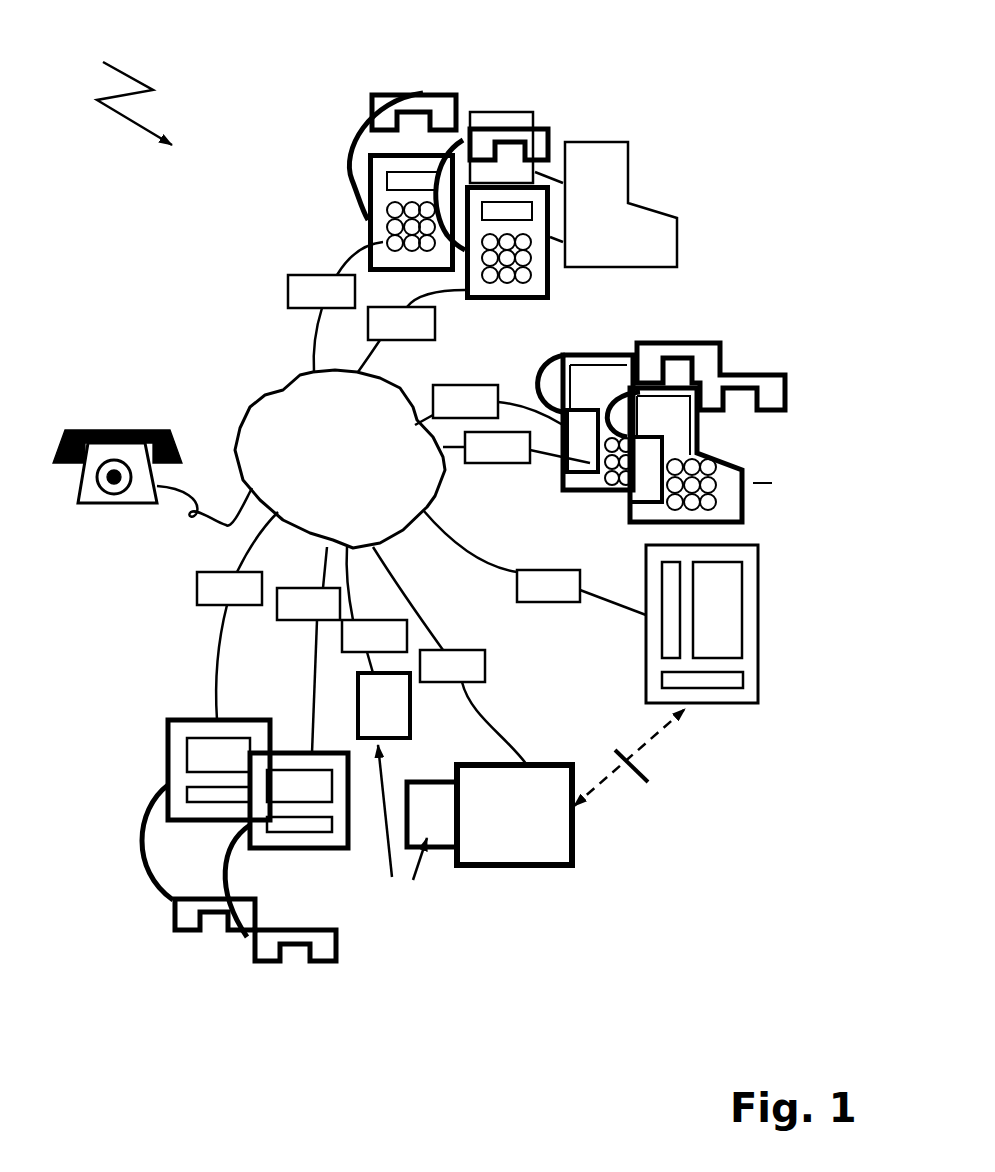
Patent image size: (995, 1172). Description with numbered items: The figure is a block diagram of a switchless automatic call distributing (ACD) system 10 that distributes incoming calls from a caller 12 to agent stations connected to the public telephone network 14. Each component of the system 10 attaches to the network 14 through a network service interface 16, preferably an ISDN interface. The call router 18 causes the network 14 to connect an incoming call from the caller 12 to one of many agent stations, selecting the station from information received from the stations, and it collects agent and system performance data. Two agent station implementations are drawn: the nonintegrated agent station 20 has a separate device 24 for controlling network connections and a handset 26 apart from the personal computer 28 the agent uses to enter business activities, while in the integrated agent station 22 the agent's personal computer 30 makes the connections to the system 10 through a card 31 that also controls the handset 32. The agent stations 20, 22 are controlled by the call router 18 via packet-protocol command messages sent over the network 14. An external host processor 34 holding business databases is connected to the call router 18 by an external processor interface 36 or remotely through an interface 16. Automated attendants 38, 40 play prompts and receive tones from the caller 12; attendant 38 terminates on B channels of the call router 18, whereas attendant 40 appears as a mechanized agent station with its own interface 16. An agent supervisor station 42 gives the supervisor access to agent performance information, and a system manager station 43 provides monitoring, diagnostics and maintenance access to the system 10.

The automatic call distributing (ACD) system 10 is at (121, 95).
The caller 12 is at (153, 430).
The public telephone network 14 is at (282, 400).
The network service interface 16 is at (280, 290).
The call router 18 is at (523, 852).
The nonintegrated agent station 20 is at (567, 69).
The integrated agent station 22 is at (775, 332).
The device for controlling network connections 24 is at (365, 215).
The handset 26 is at (423, 93).
The personal computer 28 is at (483, 113).
The personal computer 30 is at (567, 482).
The card 31 is at (558, 462).
The handset 32 is at (693, 342).
The external host processor 34 is at (758, 662).
The external processor interface 36 is at (652, 772).
The automated attendant 38 is at (420, 780).
The automated attendant 40 is at (413, 697).
The agent supervisor station 42 is at (270, 840).
The system manager station 43 is at (165, 730).